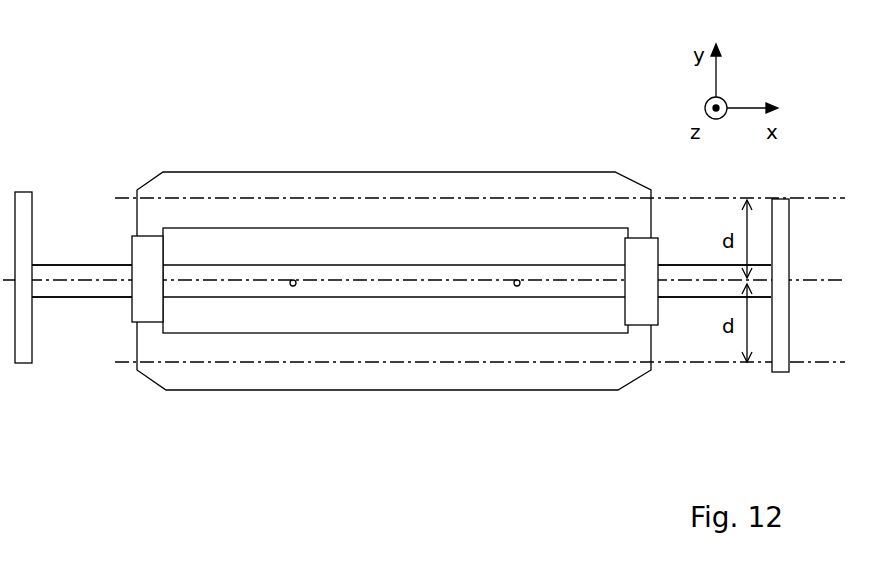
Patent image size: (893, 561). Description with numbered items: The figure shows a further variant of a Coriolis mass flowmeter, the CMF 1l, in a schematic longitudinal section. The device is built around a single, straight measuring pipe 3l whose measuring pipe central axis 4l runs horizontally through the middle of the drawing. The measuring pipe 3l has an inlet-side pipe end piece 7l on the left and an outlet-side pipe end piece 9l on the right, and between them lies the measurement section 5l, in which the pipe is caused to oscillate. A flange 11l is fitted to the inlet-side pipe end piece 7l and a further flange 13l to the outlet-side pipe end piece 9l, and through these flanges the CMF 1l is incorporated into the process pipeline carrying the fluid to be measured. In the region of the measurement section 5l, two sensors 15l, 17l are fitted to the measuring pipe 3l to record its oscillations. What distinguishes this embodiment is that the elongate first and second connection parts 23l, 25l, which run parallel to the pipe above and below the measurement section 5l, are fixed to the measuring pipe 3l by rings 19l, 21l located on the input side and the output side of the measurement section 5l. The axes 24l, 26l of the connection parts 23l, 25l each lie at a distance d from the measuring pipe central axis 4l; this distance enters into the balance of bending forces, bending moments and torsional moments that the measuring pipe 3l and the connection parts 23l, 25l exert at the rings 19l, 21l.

The CMF 1l is at (443, 486).
The measuring pipe 3l is at (112, 302).
The measuring pipe central axis 4l is at (435, 296).
The measurement section 5l is at (243, 283).
The inlet-side pipe end piece 7l is at (81, 279).
The outlet-side pipe end piece 9l is at (692, 278).
The flange 11l is at (25, 207).
The flange 13l is at (752, 311).
The sensor 15l is at (329, 182).
The sensor 17l is at (513, 278).
The ring 19l is at (134, 258).
The ring 21l is at (652, 273).
The first connection part 23l is at (263, 182).
The axis of connection part 24l is at (830, 198).
The second connection part 25l is at (216, 380).
The axis of connection part 26l is at (489, 377).